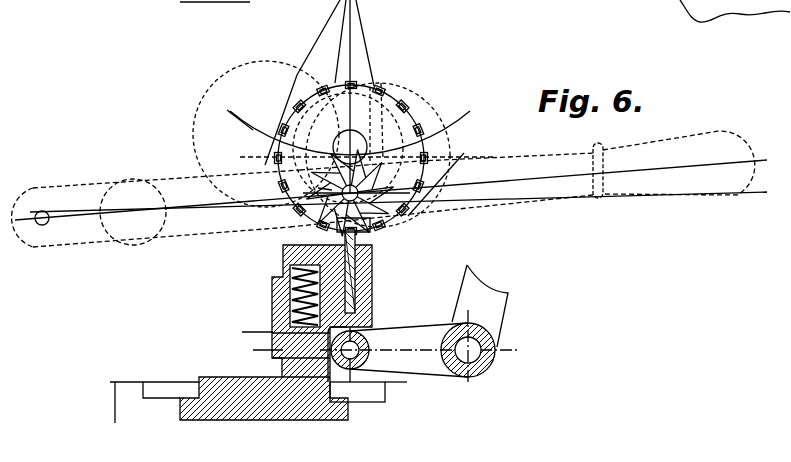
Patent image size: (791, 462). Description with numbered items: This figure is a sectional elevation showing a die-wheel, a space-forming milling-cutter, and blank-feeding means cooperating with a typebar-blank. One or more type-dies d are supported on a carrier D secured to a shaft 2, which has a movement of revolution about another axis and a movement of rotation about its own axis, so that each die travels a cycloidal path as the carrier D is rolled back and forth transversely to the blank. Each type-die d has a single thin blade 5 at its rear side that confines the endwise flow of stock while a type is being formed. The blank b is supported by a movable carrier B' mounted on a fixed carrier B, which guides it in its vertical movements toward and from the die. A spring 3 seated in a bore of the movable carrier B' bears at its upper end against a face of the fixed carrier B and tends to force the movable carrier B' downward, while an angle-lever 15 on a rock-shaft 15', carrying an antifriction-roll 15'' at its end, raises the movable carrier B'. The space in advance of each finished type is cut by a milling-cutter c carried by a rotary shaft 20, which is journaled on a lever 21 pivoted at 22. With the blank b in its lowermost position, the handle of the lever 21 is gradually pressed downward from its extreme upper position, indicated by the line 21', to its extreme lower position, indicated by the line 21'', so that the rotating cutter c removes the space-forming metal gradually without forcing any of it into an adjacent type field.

The carrier D is at (268, 112).
The type-die d is at (403, 98).
The shaft 2 is at (353, 144).
The milling-cutter c is at (388, 210).
The rotary shaft 20 is at (309, 185).
The blade 5 is at (442, 176).
The lever 21 is at (216, 218).
The pivot 22 is at (133, 245).
The extreme upper position line 21' is at (587, 172).
The extreme lower position line 21'' is at (677, 185).
The fixed carrier B is at (241, 334).
The spring 3 is at (292, 290).
The blank b is at (357, 266).
The movable carrier B' is at (367, 339).
The angle-lever 15 is at (418, 339).
The rock-shaft 15' is at (494, 324).
The antifriction-roll 15'' is at (376, 350).